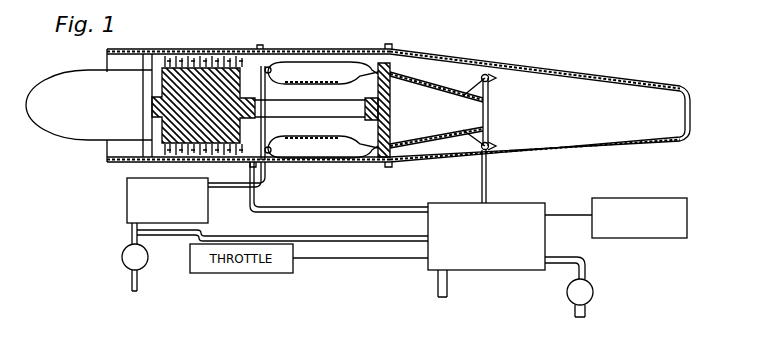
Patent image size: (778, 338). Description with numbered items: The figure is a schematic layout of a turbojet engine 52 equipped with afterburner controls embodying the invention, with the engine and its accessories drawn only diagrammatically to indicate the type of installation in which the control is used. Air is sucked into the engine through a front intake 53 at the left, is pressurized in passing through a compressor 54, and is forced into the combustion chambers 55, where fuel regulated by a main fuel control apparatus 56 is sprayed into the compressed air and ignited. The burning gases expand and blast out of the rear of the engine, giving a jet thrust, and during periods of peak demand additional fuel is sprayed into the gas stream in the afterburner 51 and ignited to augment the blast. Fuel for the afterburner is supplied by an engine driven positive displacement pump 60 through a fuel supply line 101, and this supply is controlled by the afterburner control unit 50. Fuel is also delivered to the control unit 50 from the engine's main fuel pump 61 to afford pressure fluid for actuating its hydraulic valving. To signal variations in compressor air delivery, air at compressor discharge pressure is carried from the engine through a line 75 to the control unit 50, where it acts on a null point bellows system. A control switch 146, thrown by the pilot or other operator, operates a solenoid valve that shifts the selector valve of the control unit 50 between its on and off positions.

The afterburner control unit 50 is at (475, 270).
The afterburner 51 is at (579, 56).
The turbojet engine 52 is at (342, 48).
The front intake 53 is at (122, 61).
The compressor 54 is at (188, 57).
The combustion chambers 55 is at (348, 68).
The main fuel control apparatus 56 is at (127, 198).
The positive displacement pump 60 is at (593, 292).
The main fuel pump 61 is at (122, 256).
The line 75 is at (392, 212).
The fuel supply line 101 is at (586, 264).
The control switch 146 is at (658, 238).